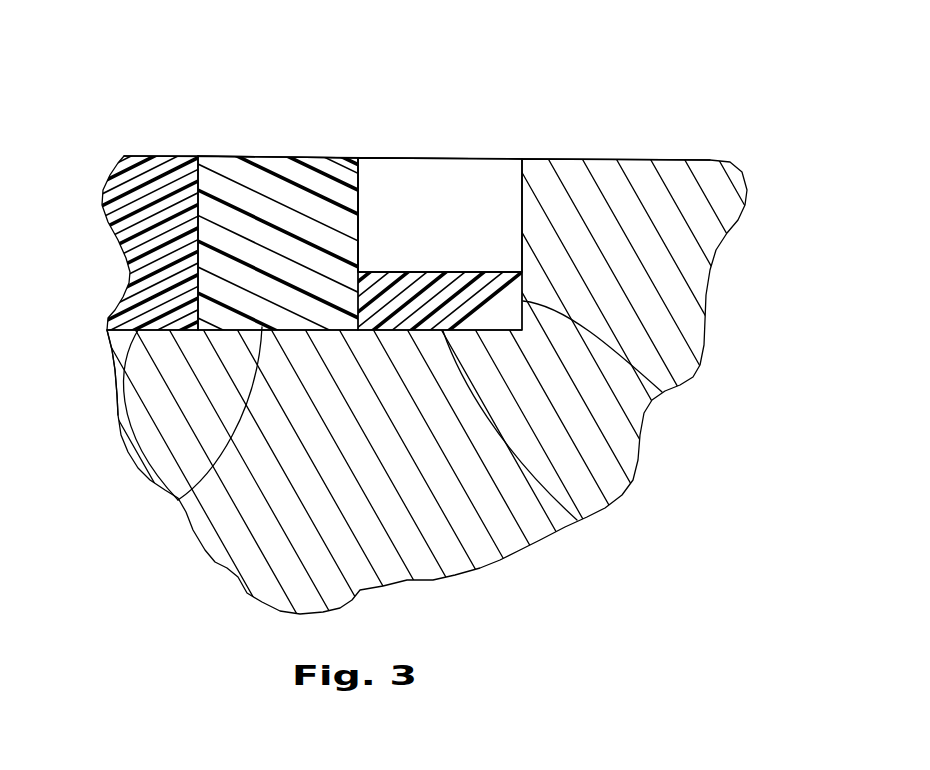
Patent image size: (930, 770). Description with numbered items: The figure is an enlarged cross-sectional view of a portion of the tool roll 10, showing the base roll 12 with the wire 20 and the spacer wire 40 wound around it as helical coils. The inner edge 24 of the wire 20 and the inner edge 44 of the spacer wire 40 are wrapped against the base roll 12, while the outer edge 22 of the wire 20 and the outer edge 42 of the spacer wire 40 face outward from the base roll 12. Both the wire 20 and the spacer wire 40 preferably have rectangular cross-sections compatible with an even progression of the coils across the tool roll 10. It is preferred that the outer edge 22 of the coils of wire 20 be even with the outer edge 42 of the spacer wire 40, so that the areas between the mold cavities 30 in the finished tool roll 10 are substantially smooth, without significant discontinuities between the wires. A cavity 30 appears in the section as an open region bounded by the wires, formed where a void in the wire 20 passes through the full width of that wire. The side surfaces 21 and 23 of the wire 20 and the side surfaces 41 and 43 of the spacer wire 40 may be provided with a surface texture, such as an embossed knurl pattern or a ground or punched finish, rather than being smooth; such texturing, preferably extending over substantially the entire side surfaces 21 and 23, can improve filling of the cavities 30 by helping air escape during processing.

The tool roll 10 is at (644, 110).
The base roll 12 is at (677, 220).
The wire 20 is at (160, 183).
The side surface of wire 21 is at (667, 391).
The outer edge of wire 22 is at (147, 156).
The side surface of wire 23 is at (355, 297).
The inner edge of wire 24 is at (120, 373).
The cavity 30 is at (483, 187).
The spacer wire 40 is at (284, 190).
The side surface of spacer wire 41 is at (358, 226).
The outer edge of spacer wire 42 is at (230, 156).
The side surface of spacer wire 43 is at (140, 273).
The inner edge of spacer wire 44 is at (162, 495).